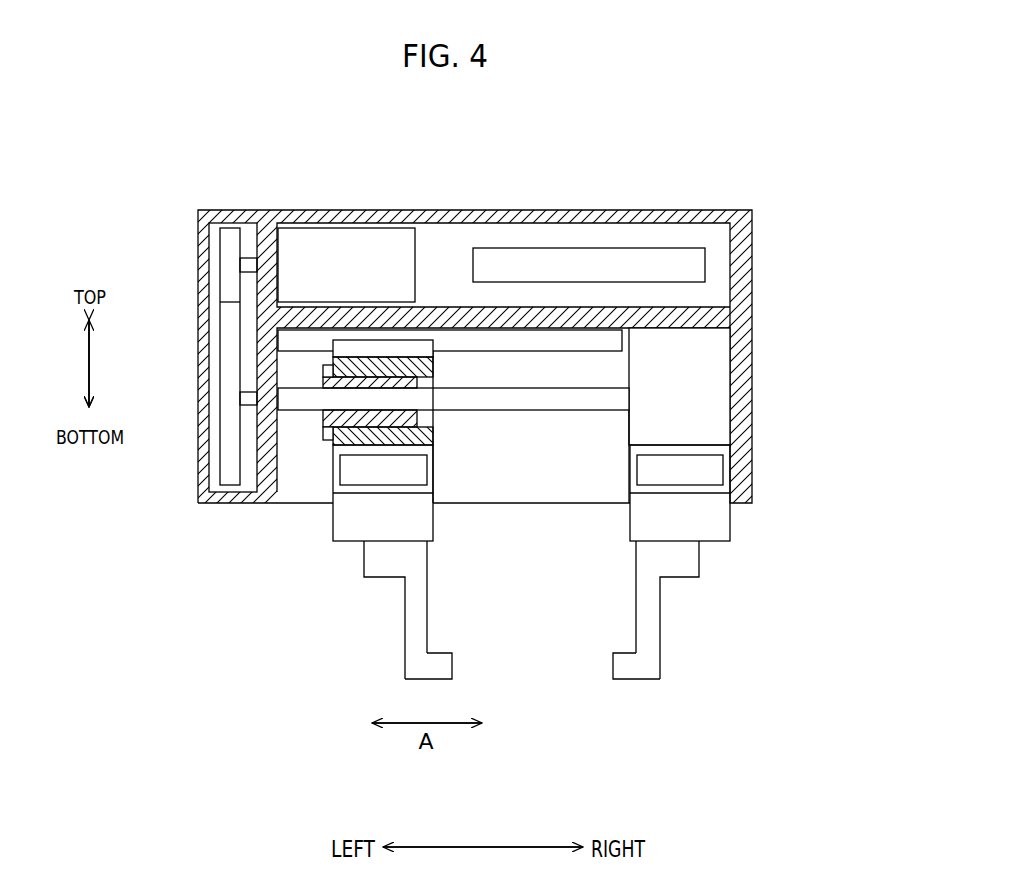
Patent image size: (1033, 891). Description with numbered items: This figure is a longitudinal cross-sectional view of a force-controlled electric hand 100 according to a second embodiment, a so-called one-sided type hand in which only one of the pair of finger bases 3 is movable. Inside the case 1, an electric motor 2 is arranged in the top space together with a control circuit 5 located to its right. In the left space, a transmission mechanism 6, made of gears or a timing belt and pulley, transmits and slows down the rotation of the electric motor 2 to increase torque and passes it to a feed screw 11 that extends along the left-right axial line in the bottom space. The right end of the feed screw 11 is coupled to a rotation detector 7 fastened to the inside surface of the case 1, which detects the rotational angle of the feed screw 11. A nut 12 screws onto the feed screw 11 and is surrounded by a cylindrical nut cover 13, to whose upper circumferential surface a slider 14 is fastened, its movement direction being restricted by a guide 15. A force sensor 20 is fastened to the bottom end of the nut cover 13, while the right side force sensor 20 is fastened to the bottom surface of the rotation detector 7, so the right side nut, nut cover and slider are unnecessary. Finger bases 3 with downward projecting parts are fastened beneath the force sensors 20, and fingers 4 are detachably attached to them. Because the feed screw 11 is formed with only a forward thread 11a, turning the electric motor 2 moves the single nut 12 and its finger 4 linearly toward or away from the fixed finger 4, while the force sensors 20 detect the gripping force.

The electric hand 100 is at (476, 391).
The case 1 is at (743, 292).
The electric motor 2 is at (348, 242).
The finger base 3 is at (378, 567).
The finger 4 is at (415, 667).
The control circuit 5 is at (545, 255).
The transmission mechanism 6 is at (219, 338).
The rotation detector 7 is at (707, 415).
The feed screw 11 is at (488, 411).
The thread 11a is at (582, 411).
The nut 12 is at (328, 418).
The nut cover 13 is at (334, 444).
The slider 14 is at (421, 347).
The guide 15 is at (587, 343).
The force sensor 20 is at (337, 490).